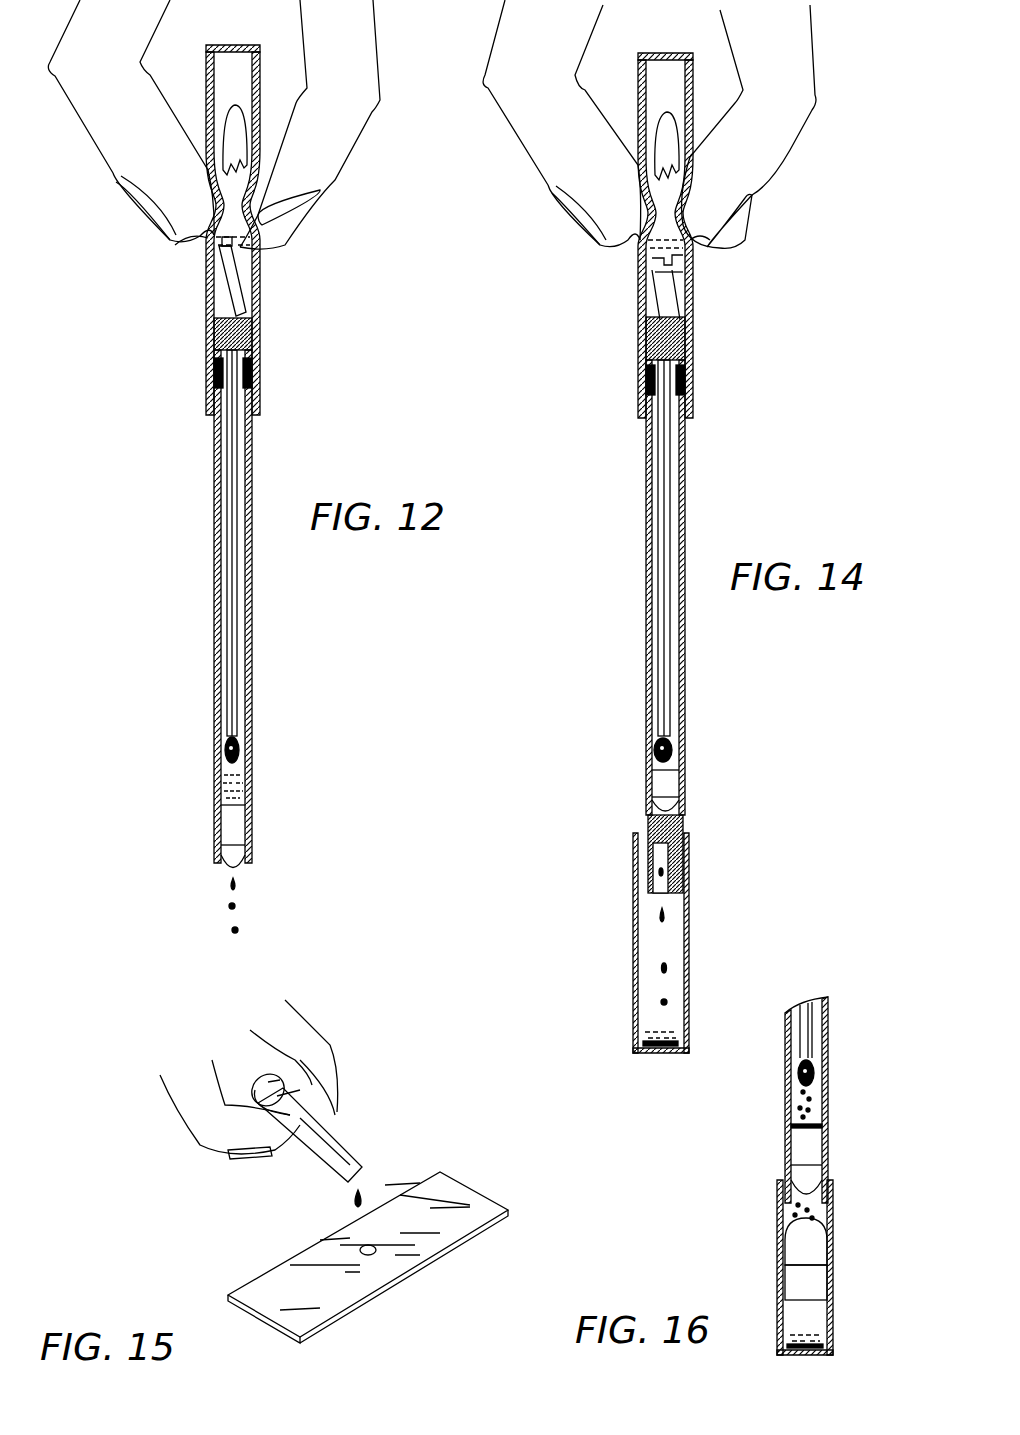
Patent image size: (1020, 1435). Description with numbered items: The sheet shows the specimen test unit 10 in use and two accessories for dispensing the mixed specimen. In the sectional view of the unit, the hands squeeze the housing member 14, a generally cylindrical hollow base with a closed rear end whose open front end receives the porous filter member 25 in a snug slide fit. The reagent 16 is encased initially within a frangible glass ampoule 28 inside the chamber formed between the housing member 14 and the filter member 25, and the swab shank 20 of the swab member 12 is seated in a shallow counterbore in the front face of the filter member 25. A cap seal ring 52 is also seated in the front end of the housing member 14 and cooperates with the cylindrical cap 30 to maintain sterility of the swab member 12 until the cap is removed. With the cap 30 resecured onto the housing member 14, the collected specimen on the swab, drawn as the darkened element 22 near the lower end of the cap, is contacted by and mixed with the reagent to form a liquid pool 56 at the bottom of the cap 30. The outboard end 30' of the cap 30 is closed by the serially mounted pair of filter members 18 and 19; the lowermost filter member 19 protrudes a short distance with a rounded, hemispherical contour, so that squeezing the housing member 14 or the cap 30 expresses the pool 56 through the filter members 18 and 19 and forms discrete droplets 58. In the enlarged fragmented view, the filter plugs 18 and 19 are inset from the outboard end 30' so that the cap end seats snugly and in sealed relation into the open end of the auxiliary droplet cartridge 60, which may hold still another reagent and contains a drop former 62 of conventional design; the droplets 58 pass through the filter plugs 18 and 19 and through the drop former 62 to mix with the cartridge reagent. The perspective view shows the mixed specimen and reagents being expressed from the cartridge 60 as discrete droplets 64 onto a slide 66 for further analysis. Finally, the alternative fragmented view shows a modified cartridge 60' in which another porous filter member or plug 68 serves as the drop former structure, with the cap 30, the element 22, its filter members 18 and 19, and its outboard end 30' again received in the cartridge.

In FIG. 12, the specimen test unit 10 is at (318, 342).
In FIG. 12, the swab member 12 is at (250, 478).
In FIG. 12, the housing member 14 is at (270, 296).
In FIG. 14, the housing member 14 is at (636, 296).
In FIG. 12, the reagent 16 is at (215, 242).
In FIG. 14, the reagent 16 is at (680, 262).
In FIG. 12, the filter member 18 is at (243, 825).
In FIG. 14, the filter member 18 is at (665, 780).
In FIG. 16, the filter member 18 is at (808, 1138).
In FIG. 12, the filter member 19 is at (232, 860).
In FIG. 14, the filter member 19 is at (663, 805).
In FIG. 16, the filter member 19 is at (812, 1172).
In FIG. 12, the swab shank 20 is at (238, 493).
In FIG. 14, the swab shank 20 is at (662, 524).
In FIG. 12, the swab / sample 22 is at (246, 750).
In FIG. 14, the swab / sample 22 is at (652, 752).
In FIG. 16, the swab / sample 22 is at (815, 1075).
In FIG. 12, the filter member 25 is at (254, 335).
In FIG. 14, the filter member 25 is at (683, 340).
In FIG. 12, the frangible glass ampoule 28 is at (214, 280).
In FIG. 12, the cap 30 is at (257, 606).
In FIG. 14, the cap 30 is at (696, 587).
In FIG. 16, the cap 30 is at (827, 1100).
In FIG. 12, the outboard end of the cap 30' is at (198, 825).
In FIG. 14, the outboard end of the cap 30' is at (598, 831).
In FIG. 12, the cap seal ring 52 is at (254, 378).
In FIG. 12, the liquid pool 56 is at (221, 792).
In FIG. 12, the droplets 58 is at (233, 930).
In FIG. 14, the droplets 58 is at (662, 915).
In FIG. 16, the droplets 58 is at (790, 1103).
In FIG. 14, the auxiliary droplet cartridge 60 is at (705, 943).
In FIG. 15, the auxiliary droplet cartridge 60 is at (311, 1125).
In FIG. 16, the modified cartridge 60' is at (828, 1267).
In FIG. 14, the drop former 62 is at (684, 828).
In FIG. 15, the droplets 64 is at (363, 1198).
In FIG. 15, the slide 66 is at (488, 1212).
In FIG. 16, the porous filter member 68 is at (812, 1240).